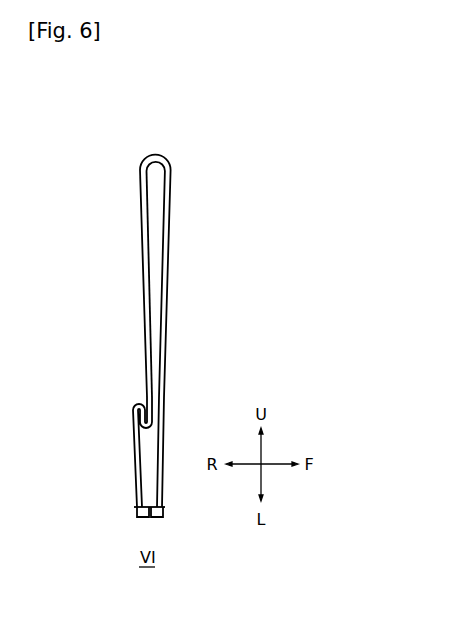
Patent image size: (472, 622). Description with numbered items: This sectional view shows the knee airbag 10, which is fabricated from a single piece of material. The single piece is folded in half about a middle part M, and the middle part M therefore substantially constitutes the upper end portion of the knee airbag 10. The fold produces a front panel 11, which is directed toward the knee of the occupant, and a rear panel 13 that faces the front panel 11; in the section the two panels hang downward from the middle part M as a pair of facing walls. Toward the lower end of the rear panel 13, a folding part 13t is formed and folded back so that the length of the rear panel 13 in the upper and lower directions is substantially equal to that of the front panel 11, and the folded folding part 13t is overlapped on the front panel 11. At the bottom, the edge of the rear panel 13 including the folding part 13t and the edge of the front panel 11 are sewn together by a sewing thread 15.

The knee airbag 10 is at (158, 316).
The front panel 11 is at (168, 253).
The rear panel 13 is at (140, 254).
The folding part 13t is at (133, 405).
The sewing thread 15 is at (137, 507).
The middle part M is at (160, 155).